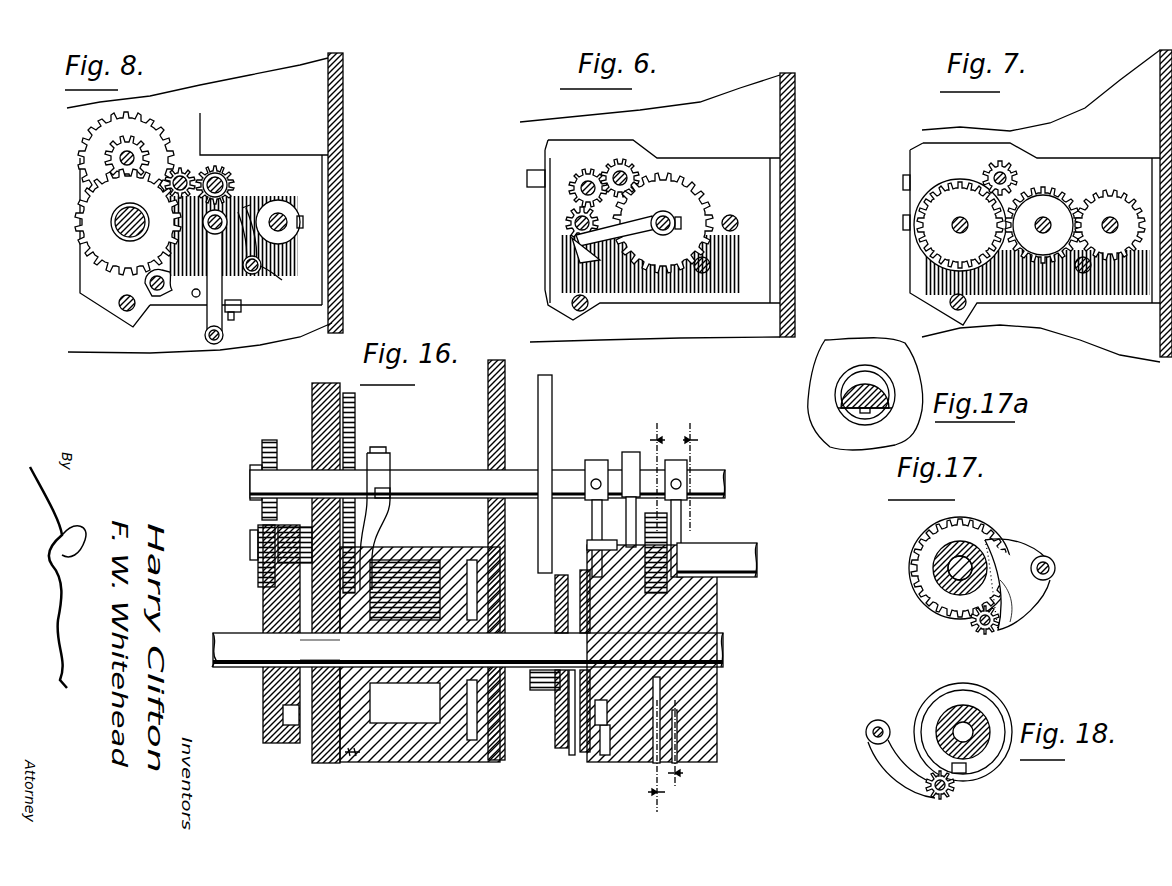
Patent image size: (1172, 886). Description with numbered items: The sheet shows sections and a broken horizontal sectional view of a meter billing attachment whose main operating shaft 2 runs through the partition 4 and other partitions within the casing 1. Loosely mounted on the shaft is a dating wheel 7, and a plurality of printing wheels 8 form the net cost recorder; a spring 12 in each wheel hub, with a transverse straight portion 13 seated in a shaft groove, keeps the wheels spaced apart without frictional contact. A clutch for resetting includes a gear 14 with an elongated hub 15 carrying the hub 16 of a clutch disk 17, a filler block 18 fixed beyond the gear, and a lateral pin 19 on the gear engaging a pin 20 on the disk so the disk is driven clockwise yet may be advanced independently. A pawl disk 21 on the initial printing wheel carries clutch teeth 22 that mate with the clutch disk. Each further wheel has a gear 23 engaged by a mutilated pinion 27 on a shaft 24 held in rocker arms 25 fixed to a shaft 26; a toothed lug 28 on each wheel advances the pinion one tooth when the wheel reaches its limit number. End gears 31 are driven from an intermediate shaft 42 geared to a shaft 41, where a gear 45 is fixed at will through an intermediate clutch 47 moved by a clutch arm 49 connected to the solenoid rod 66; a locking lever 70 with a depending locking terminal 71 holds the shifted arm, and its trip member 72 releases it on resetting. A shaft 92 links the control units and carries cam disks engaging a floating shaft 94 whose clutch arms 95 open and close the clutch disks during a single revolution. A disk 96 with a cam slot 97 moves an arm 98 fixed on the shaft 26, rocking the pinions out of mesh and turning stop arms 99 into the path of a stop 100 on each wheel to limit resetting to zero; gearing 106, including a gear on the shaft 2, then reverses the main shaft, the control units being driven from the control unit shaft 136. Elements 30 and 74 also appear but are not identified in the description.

In FIG. 8, the casing 1 is at (341, 111).
In FIG. 6, the casing 1 is at (795, 131).
In FIG. 7, the casing 1 is at (1158, 343).
In FIG. 8, the main operating shaft 2 is at (117, 228).
In FIG. 6, the main operating shaft 2 is at (572, 226).
In FIG. 7, the main operating shaft 2 is at (952, 226).
In FIG. 16, the main operating shaft 2 is at (726, 651).
In FIG. 17A, the main operating shaft 2 is at (856, 387).
In FIG. 17, the main operating shaft 2 is at (946, 580).
In FIG. 18, the main operating shaft 2 is at (970, 728).
In FIG. 8, the partition 4 is at (324, 180).
In FIG. 7, the dating wheel 7 is at (925, 257).
In FIG. 16, the dating wheel 7 is at (412, 755).
In FIG. 17A, the printing wheels 8 is at (823, 398).
In FIG. 17A, the spring 12 is at (871, 378).
In FIG. 17, the spring 12 is at (918, 563).
In FIG. 17A, the transverse straight portion 13 is at (862, 415).
In FIG. 17, the transverse straight portion 13 is at (937, 611).
In FIG. 8, the gear 14 is at (80, 222).
In FIG. 16, the gear 14 is at (558, 734).
In FIG. 8, the elongated hub 15 is at (129, 208).
In FIG. 16, the elongated hub 15 is at (524, 690).
In FIG. 16, the hub of clutch disk 16 is at (575, 752).
In FIG. 16, the clutch disk 17 is at (584, 781).
In FIG. 16, the filler block 18 is at (522, 606).
In FIG. 16, the lateral pin 19 is at (565, 572).
In FIG. 16, the pin 20 is at (582, 568).
In FIG. 16, the pawl disk 21 is at (600, 760).
In FIG. 16, the clutch teeth 22 is at (606, 752).
In FIG. 16, the gear 23 is at (690, 752).
In FIG. 8, the shaft 24 is at (160, 305).
In FIG. 16, the shaft 24 is at (736, 550).
In FIG. 17, the shaft 24 is at (997, 630).
In FIG. 18, the shaft 24 is at (934, 791).
In FIG. 16, the rocker arms 25 is at (628, 522).
In FIG. 17, the rocker arms 25 is at (1026, 606).
In FIG. 18, the rocker arms 25 is at (888, 762).
In FIG. 8, the shaft 26 is at (225, 221).
In FIG. 6, the shaft 26 is at (666, 219).
In FIG. 7, the shaft 26 is at (1046, 219).
In FIG. 16, the shaft 26 is at (718, 475).
In FIG. 17, the shaft 26 is at (1056, 569).
In FIG. 18, the shaft 26 is at (872, 740).
In FIG. 16, the mutilated pinion 27 is at (661, 531).
In FIG. 17, the mutilated pinion 27 is at (978, 635).
In FIG. 18, the mutilated pinion 27 is at (954, 792).
In FIG. 18, the toothed lug 28 is at (968, 775).
In FIG. 8, the pinion 30 is at (127, 152).
In FIG. 8, the end gears 31 is at (88, 139).
In FIG. 8, the shaft 41 is at (226, 178).
In FIG. 8, the intermediate shaft 42 is at (187, 176).
In FIG. 8, the gear 45 is at (221, 168).
In FIG. 8, the intermediate clutch 47 is at (229, 187).
In FIG. 8, the clutch arm 49 is at (206, 318).
In FIG. 8, the rod 66 is at (224, 335).
In FIG. 8, the locking lever 70 is at (253, 230).
In FIG. 8, the locking terminal 71 is at (242, 315).
In FIG. 8, the trip member 72 is at (253, 235).
In FIG. 8, the screw 74 is at (123, 312).
In FIG. 6, the screw 74 is at (578, 312).
In FIG. 7, the screw 74 is at (955, 310).
In FIG. 8, the shaft 92 is at (280, 214).
In FIG. 6, the shaft 92 is at (733, 216).
In FIG. 7, the shaft 92 is at (1112, 219).
In FIG. 8, the floating shaft 94 is at (258, 272).
In FIG. 6, the floating shaft 94 is at (709, 269).
In FIG. 7, the floating shaft 94 is at (1085, 274).
In FIG. 8, the clutch arms 95 is at (264, 264).
In FIG. 16, the clutch arms 95 is at (549, 452).
In FIG. 16, the disk 96 is at (266, 712).
In FIG. 16, the cam slot 97 is at (290, 726).
In FIG. 6, the arm 98 is at (637, 226).
In FIG. 16, the arm 98 is at (381, 480).
In FIG. 17, the stop arms 99 is at (1022, 549).
In FIG. 17, the stop 100 is at (987, 540).
In FIG. 6, the gearing 106 is at (590, 173).
In FIG. 7, the gearing 106 is at (1000, 166).
In FIG. 16, the control unit shaft 136 is at (222, 668).